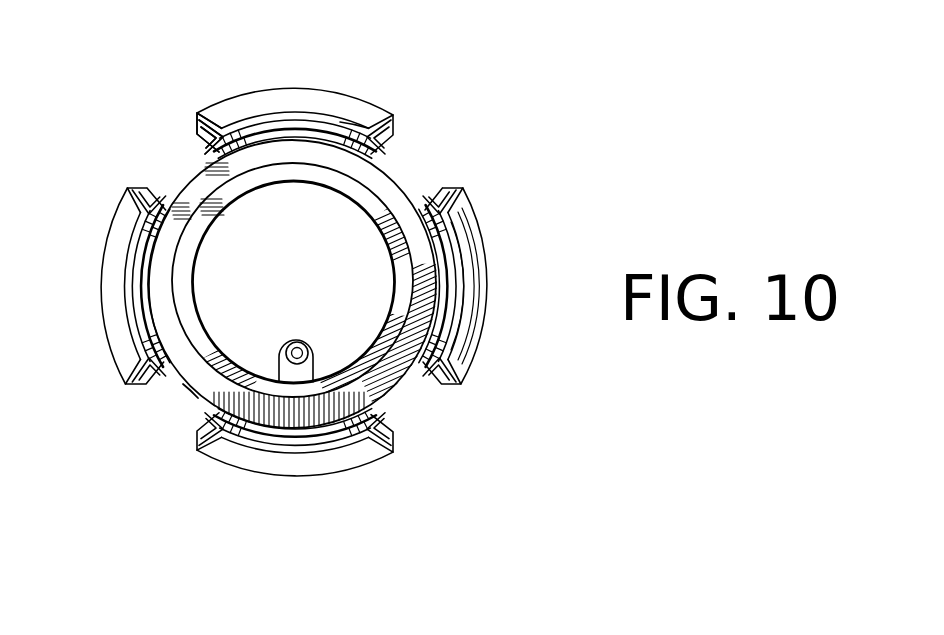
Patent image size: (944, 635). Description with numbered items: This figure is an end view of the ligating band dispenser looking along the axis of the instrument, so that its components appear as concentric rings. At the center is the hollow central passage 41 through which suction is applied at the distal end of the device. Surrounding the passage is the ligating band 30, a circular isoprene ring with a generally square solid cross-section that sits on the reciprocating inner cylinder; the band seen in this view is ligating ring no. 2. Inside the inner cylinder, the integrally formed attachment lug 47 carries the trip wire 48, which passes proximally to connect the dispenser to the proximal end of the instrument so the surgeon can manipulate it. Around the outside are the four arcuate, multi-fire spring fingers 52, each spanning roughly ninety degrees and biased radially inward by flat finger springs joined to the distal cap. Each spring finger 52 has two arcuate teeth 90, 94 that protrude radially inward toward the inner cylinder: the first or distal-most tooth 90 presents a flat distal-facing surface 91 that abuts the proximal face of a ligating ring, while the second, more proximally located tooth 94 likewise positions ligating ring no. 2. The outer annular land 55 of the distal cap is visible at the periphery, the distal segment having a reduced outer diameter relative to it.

The ligating ring no. 2 is at (193, 393).
The ligating band 30 is at (394, 190).
The hollow central passage 41 is at (268, 181).
The attachment lug 47 is at (279, 365).
The trip wire 48 is at (300, 342).
The spring finger 52 is at (299, 96).
The outer annular land 55 is at (406, 427).
The tooth 90 is at (232, 127).
The flat distal-facing surface 91 is at (372, 118).
The tooth 94 is at (193, 148).